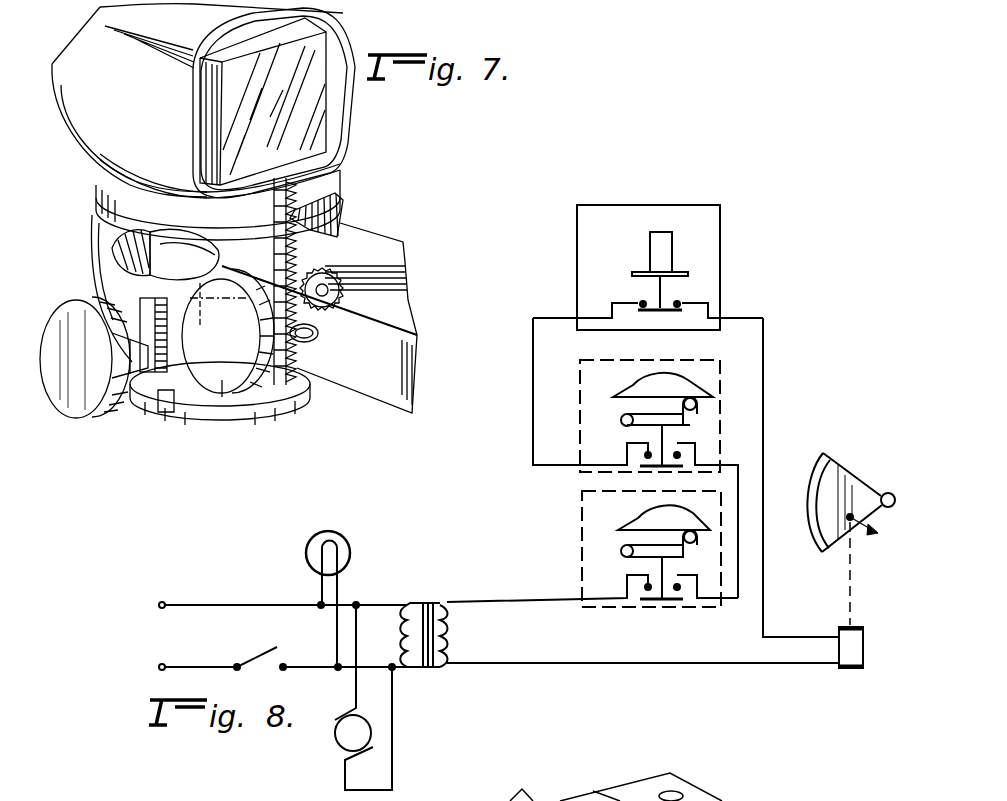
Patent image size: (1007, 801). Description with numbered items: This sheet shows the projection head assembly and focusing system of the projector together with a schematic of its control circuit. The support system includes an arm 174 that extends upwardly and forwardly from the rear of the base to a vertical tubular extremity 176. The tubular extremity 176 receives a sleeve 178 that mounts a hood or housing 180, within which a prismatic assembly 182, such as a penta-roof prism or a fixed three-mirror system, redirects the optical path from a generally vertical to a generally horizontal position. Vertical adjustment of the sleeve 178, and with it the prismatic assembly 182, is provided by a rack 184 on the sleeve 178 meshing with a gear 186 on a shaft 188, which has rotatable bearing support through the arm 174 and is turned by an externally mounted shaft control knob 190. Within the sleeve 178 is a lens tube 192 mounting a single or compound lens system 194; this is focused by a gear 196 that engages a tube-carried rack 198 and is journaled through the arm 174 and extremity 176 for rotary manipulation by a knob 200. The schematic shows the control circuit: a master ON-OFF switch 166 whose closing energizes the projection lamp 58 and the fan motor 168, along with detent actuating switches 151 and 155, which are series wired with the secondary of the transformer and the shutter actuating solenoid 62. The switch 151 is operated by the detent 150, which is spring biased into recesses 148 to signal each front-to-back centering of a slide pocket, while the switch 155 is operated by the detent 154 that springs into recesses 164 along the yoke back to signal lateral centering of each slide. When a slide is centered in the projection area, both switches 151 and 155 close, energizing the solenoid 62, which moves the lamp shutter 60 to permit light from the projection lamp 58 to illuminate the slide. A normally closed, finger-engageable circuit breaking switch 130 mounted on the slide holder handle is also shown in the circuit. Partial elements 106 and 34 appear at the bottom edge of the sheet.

In FIG. 7, the hood or housing 180 is at (152, 87).
In FIG. 7, the prismatic assembly 182 is at (312, 106).
In FIG. 7, the sleeve 178 is at (322, 178).
In FIG. 7, the rack 184 is at (348, 212).
In FIG. 7, the tubular extremity 176 is at (235, 272).
In FIG. 7, the gear 186 is at (347, 299).
In FIG. 7, the shaft 188 is at (318, 334).
In FIG. 7, the arm 174 is at (357, 373).
In FIG. 7, the lens system 194 is at (112, 248).
In FIG. 7, the lens tube 192 is at (150, 320).
In FIG. 7, the knob 200 is at (87, 345).
In FIG. 7, the gear 196 is at (157, 366).
In FIG. 7, the tube-carried rack 198 is at (165, 412).
In FIG. 7, the shaft control knob 190 is at (222, 383).
In FIG. 8, the circuit breaking switch 130 is at (693, 256).
In FIG. 8, the detent actuating switch 151 is at (672, 458).
In FIG. 8, the recesses 148 is at (647, 397).
In FIG. 8, the detent 150 is at (700, 405).
In FIG. 8, the detent actuating switch 155 is at (626, 533).
In FIG. 8, the recesses 164 is at (647, 529).
In FIG. 8, the detent 154 is at (700, 539).
In FIG. 8, the lamp shutter 60 is at (829, 478).
In FIG. 8, the solenoid 62 is at (850, 650).
In FIG. 8, the projection lamp 58 is at (348, 556).
In FIG. 8, the master ON-OFF switch 166 is at (252, 655).
In FIG. 8, the fan motor 168 is at (371, 730).
In FIG. 8, the roof element 106 is at (530, 785).
In FIG. 8, the fastener 34 is at (676, 794).